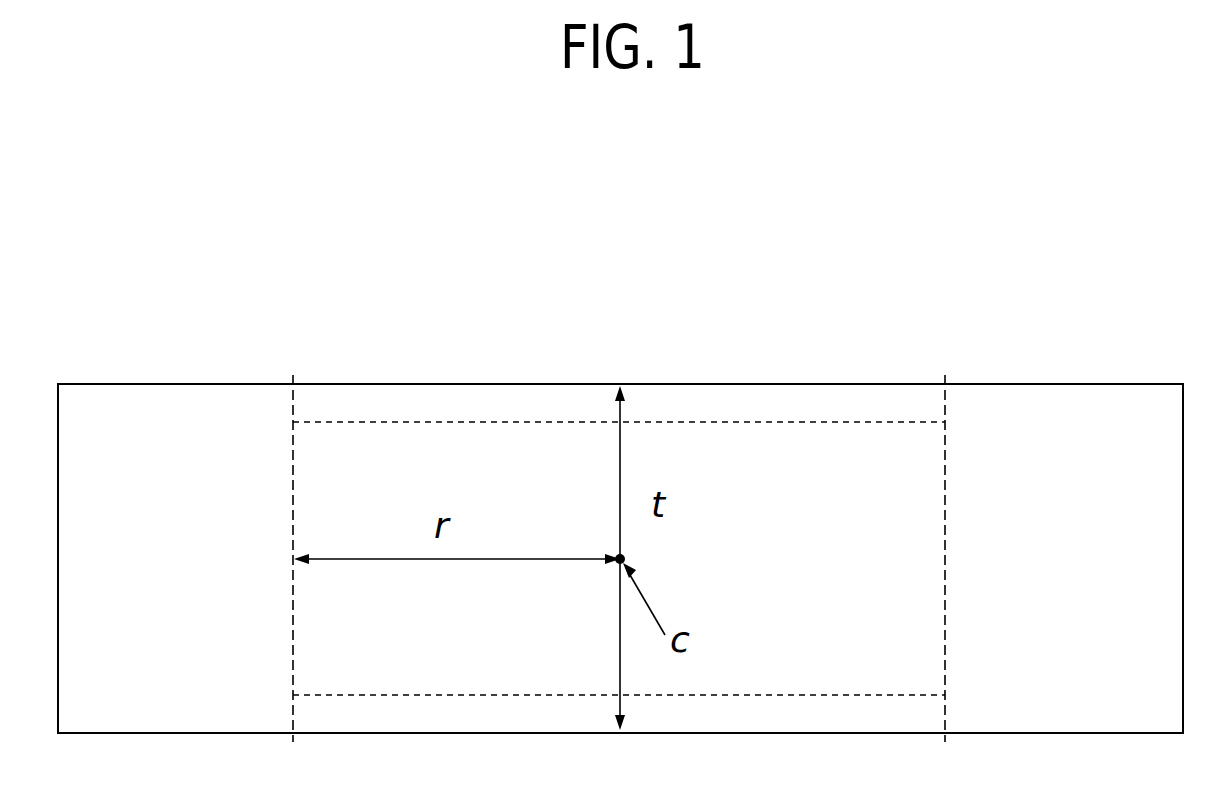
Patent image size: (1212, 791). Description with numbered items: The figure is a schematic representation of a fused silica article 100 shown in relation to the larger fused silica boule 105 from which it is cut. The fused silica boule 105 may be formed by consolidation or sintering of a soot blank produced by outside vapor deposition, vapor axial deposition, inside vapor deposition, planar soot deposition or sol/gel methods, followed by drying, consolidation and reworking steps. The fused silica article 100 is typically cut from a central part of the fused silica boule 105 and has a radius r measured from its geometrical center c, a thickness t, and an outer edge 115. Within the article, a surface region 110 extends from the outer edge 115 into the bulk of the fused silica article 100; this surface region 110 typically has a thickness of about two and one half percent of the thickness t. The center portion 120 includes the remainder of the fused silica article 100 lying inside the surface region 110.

The fused silica article 100 is at (293, 467).
The fused silica boule 105 is at (117, 421).
The surface region 110 is at (812, 408).
The outer edge 115 is at (545, 377).
The center portion 120 is at (619, 558).